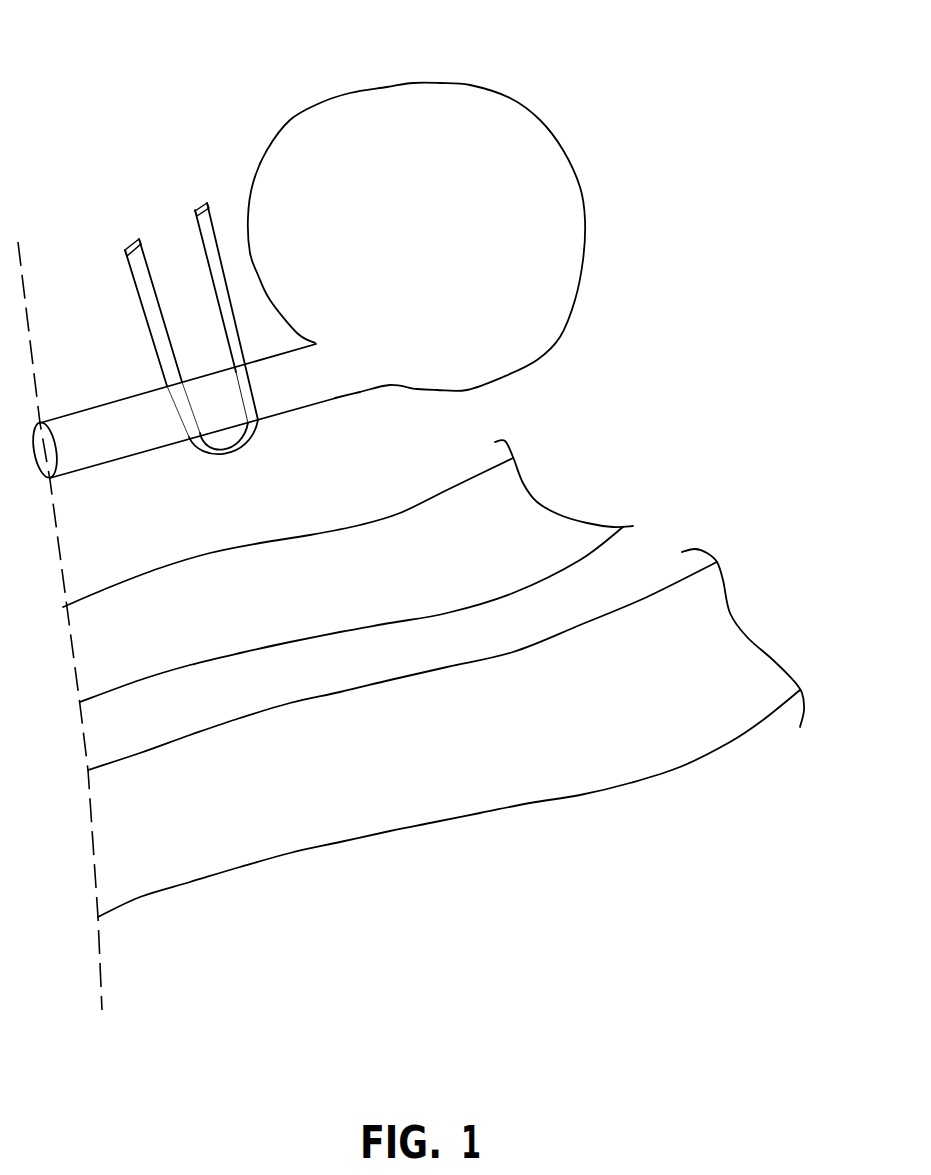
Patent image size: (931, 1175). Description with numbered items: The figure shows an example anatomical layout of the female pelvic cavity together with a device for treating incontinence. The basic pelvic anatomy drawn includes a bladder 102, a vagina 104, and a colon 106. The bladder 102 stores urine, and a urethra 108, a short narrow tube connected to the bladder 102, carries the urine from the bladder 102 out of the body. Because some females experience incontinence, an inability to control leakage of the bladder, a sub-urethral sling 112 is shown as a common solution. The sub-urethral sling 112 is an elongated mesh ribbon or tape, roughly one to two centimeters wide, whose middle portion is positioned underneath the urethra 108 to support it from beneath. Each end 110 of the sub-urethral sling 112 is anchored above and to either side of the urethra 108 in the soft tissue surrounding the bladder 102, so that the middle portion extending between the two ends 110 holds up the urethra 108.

The bladder 102 is at (412, 80).
The vagina 104 is at (553, 495).
The colon 106 is at (743, 605).
The urethra 108 is at (130, 392).
The end of the sub-urethral sling 110 is at (151, 299).
The sub-urethral sling 112 is at (136, 296).